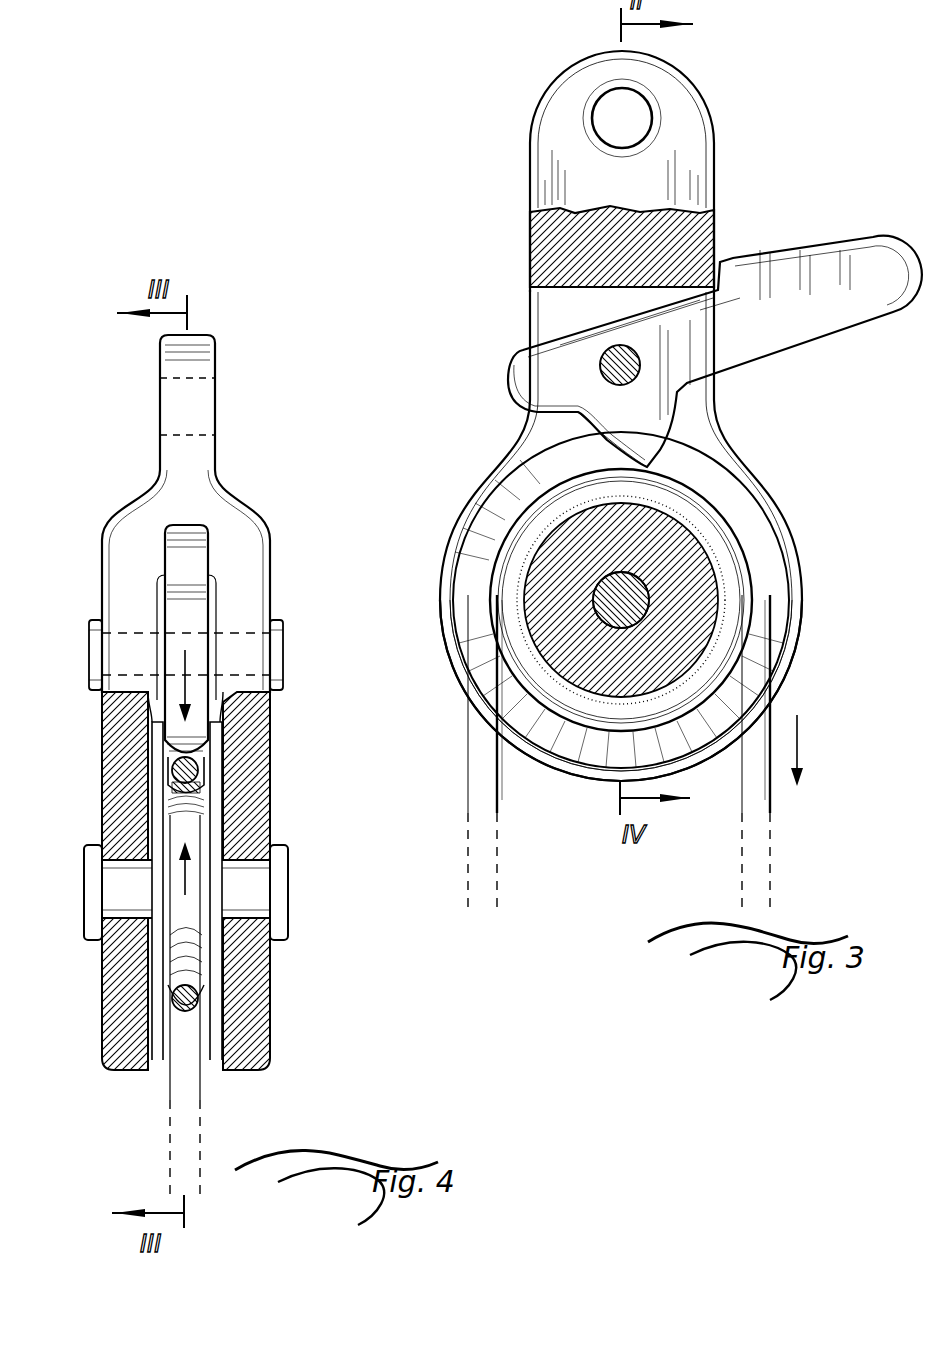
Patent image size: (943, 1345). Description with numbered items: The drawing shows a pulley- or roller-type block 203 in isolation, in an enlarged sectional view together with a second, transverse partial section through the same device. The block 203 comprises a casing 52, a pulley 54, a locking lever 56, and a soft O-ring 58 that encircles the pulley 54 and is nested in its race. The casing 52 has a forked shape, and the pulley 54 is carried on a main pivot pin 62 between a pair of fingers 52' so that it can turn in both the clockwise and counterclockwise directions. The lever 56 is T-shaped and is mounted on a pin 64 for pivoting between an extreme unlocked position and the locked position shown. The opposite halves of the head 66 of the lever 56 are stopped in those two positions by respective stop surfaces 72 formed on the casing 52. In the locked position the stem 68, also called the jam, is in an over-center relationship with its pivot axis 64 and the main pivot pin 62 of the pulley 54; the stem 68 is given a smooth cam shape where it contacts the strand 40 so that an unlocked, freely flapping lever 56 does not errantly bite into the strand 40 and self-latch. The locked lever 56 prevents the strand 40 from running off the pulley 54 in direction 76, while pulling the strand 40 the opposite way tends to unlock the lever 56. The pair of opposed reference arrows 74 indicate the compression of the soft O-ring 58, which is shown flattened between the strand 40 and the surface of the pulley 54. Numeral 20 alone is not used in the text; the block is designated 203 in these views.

In FIG. 3, the pulley block assembly 20 is at (545, 80).
In FIG. 4, the pulley block assembly 20 is at (140, 458).
In FIG. 3, the block 203 is at (621, 396).
In FIG. 4, the block 203 is at (157, 542).
In FIG. 3, the strand 40 is at (477, 773).
In FIG. 4, the strand 40 is at (160, 770).
In FIG. 3, the casing 52 is at (654, 171).
In FIG. 4, the casing 52 is at (157, 401).
In FIG. 4, the fingers 52' is at (185, 881).
In FIG. 3, the pulley 54 is at (532, 717).
In FIG. 4, the pulley 54 is at (180, 945).
In FIG. 3, the locking lever 56 is at (838, 240).
In FIG. 4, the locking lever 56 is at (178, 555).
In FIG. 3, the soft O-ring 58 is at (517, 658).
In FIG. 4, the soft O-ring 58 is at (170, 780).
In FIG. 3, the main pivot pin 62 is at (687, 537).
In FIG. 4, the main pivot pin 62 is at (282, 878).
In FIG. 3, the pin 64 is at (633, 368).
In FIG. 3, the head 66 is at (542, 383).
In FIG. 3, the stem 68 is at (623, 422).
In FIG. 3, the stop surfaces 72 is at (715, 229).
In FIG. 4, the reference arrows 74 is at (192, 705).
In FIG. 3, the direction 76 is at (797, 722).